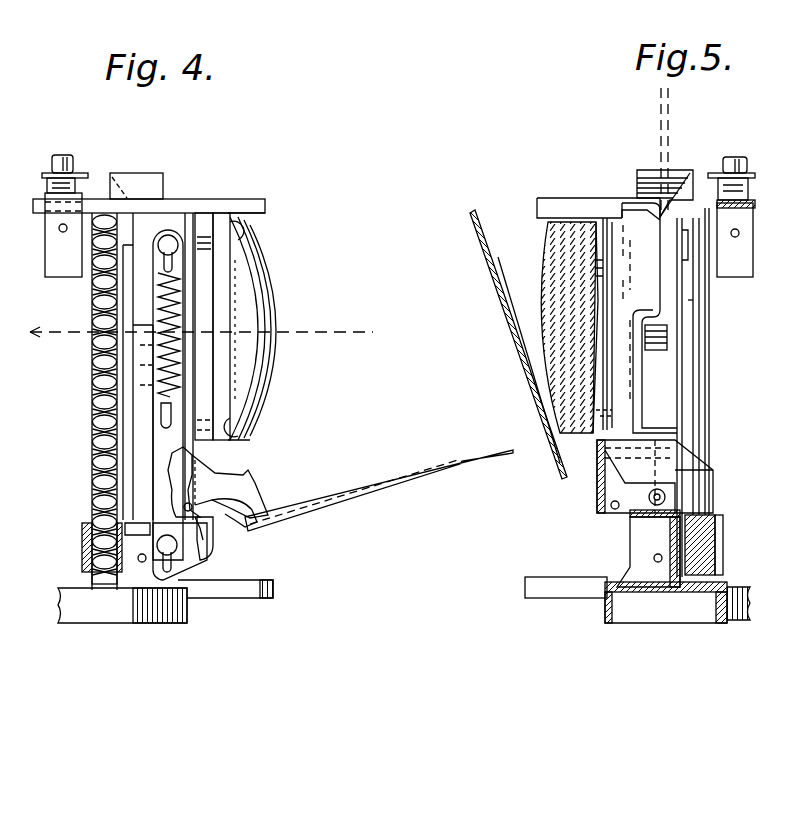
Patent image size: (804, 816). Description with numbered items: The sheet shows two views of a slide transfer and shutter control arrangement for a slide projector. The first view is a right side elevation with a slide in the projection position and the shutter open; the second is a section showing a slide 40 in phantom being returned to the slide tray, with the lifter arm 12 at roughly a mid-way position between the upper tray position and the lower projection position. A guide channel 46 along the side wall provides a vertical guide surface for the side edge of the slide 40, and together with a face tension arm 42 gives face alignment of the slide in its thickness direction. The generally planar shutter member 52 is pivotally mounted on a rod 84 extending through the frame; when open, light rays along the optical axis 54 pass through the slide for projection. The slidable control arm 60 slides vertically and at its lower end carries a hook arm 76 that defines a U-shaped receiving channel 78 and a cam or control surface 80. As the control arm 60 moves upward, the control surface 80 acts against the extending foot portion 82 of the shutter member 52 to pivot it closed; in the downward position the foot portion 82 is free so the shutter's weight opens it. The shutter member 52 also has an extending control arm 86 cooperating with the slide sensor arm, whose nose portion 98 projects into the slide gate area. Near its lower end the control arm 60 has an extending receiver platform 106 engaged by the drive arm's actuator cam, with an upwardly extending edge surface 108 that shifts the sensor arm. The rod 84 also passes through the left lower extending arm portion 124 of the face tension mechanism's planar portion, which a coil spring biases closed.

In FIG. 5, the lifter arm 12 is at (673, 467).
In FIG. 5, the slide 40 is at (667, 115).
In FIG. 5, the face tension arm 42 is at (640, 220).
In FIG. 5, the guide channel 46 is at (660, 207).
In FIG. 4, the shutter member 52 is at (400, 487).
In FIG. 4, the optical axis 54 is at (353, 330).
In FIG. 4, the slidable control arm 60 is at (165, 523).
In FIG. 4, the hook arm 76 is at (203, 550).
In FIG. 4, the U-shaped receiving channel 78 is at (200, 543).
In FIG. 4, the cam or control surface 80 is at (203, 528).
In FIG. 4, the extending foot portion 82 is at (227, 513).
In FIG. 4, the rod 84 is at (248, 483).
In FIG. 4, the extending control arm 86 is at (193, 460).
In FIG. 5, the nose portion 98 is at (660, 338).
In FIG. 4, the extending receiver platform 106 is at (133, 537).
In FIG. 4, the upwardly extending edge surface 108 is at (143, 557).
In FIG. 5, the left lower extending arm portion 124 is at (612, 510).